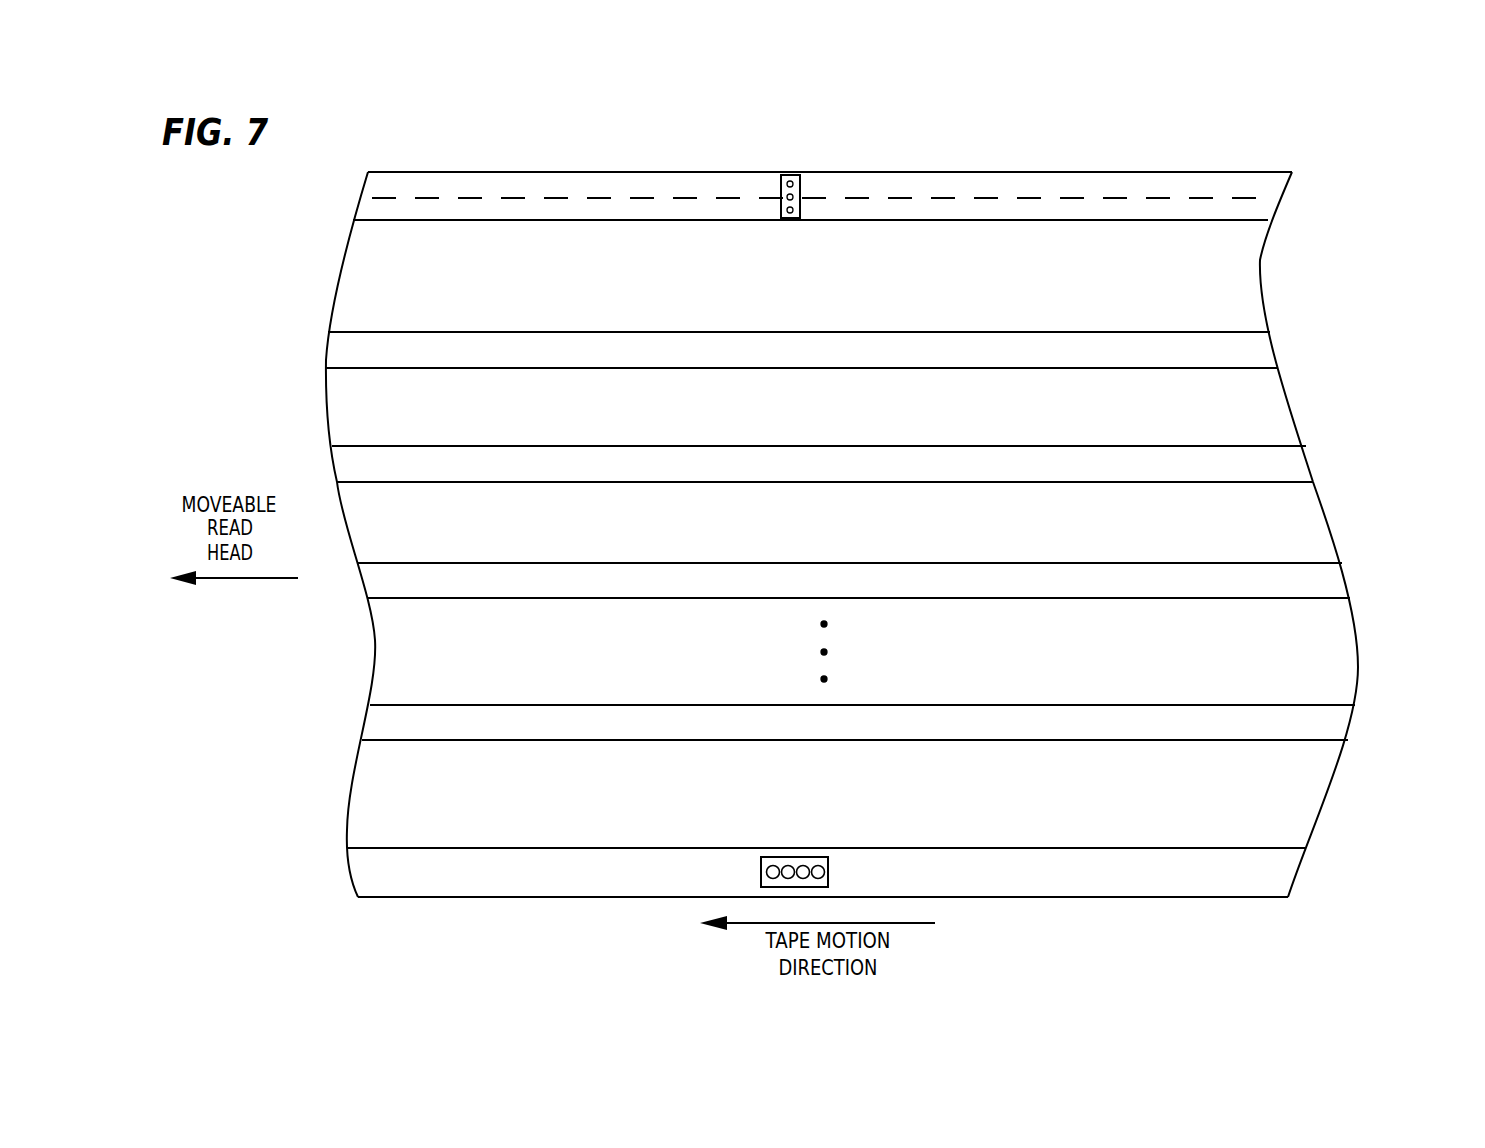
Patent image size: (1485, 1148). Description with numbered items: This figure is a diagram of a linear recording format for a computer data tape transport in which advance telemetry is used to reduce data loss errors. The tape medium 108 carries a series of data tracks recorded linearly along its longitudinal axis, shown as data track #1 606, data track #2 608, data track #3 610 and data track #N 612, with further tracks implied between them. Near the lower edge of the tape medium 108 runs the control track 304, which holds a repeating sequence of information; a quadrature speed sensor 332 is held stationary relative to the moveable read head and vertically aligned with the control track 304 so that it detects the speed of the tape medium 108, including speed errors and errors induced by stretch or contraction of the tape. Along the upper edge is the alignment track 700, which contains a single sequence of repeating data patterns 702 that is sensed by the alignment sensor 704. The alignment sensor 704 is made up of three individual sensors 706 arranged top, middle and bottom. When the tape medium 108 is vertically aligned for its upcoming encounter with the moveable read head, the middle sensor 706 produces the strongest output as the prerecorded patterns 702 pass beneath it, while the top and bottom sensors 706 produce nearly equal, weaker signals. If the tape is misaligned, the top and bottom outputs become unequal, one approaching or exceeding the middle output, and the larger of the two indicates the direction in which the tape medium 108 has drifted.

The tape medium 108 is at (1330, 514).
The alignment track 700 is at (1273, 181).
The repeating data patterns 702 is at (1140, 197).
The alignment sensor 704 is at (800, 184).
The individual sensors 706 is at (781, 210).
The data track #1 606 is at (1257, 343).
The data track #2 608 is at (1287, 457).
The data track #3 610 is at (1332, 580).
The data track #N 612 is at (1337, 714).
The control track 304 is at (1280, 870).
The quadrature speed sensor 332 is at (830, 869).